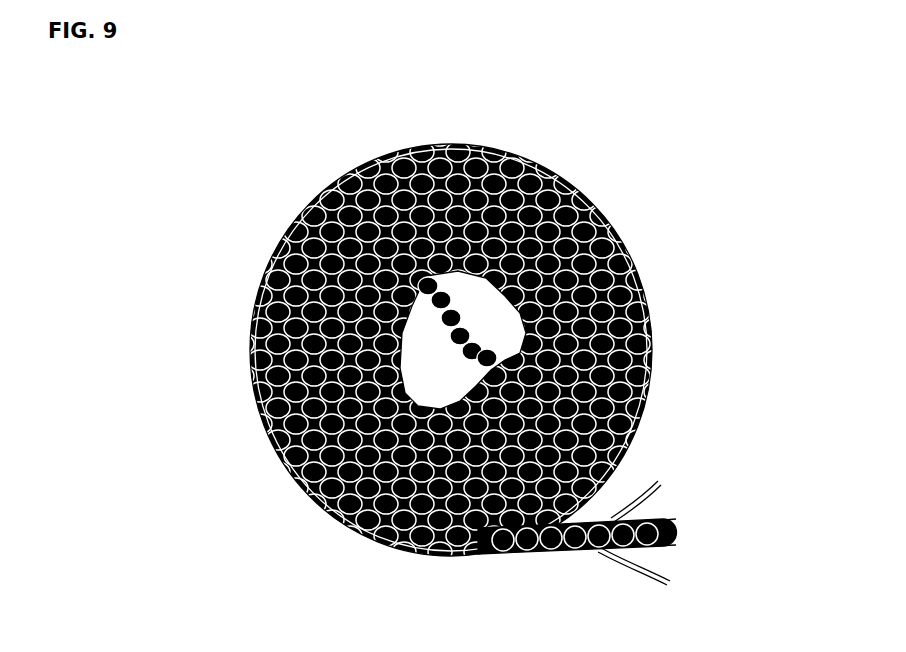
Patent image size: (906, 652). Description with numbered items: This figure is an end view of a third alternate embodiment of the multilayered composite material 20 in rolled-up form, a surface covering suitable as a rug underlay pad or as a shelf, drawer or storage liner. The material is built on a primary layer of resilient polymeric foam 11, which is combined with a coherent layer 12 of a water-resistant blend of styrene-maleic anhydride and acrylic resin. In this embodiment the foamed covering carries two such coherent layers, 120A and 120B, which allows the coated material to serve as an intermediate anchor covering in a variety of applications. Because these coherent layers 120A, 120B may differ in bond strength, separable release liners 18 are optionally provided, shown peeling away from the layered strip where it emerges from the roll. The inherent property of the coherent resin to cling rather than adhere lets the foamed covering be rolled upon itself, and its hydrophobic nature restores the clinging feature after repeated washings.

The multilayered composite material 20 is at (623, 148).
The coherent layer 12 is at (274, 228).
The primary layer of resilient polymeric foam 11 is at (482, 535).
The separable release liner 18 is at (622, 504).
The coherent layer 120B is at (665, 515).
The coherent layer 120A is at (667, 538).